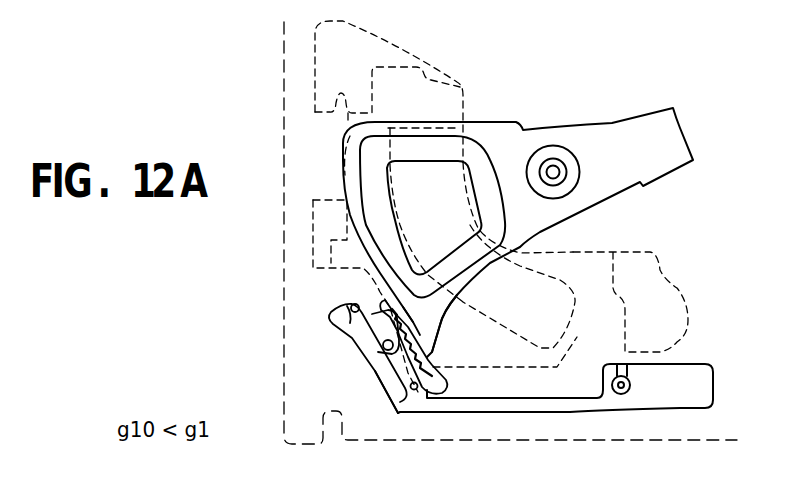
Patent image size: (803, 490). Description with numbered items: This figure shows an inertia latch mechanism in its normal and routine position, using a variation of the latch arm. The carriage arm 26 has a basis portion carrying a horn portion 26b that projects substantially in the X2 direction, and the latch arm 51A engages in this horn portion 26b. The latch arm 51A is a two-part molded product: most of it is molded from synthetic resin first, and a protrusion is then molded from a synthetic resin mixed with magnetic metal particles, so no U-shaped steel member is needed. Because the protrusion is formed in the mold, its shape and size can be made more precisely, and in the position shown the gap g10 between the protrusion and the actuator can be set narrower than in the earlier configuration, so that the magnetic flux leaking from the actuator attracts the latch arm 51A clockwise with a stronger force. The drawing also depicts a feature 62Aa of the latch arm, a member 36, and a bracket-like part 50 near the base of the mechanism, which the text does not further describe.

The carriage arm 26 is at (616, 122).
The hidden link member 36 is at (573, 253).
The horn portion 26b is at (433, 352).
The lever arm portion 62Aa is at (372, 320).
The gap g10 is at (383, 306).
The latch arm 51A is at (386, 388).
The bracket 50 is at (538, 411).